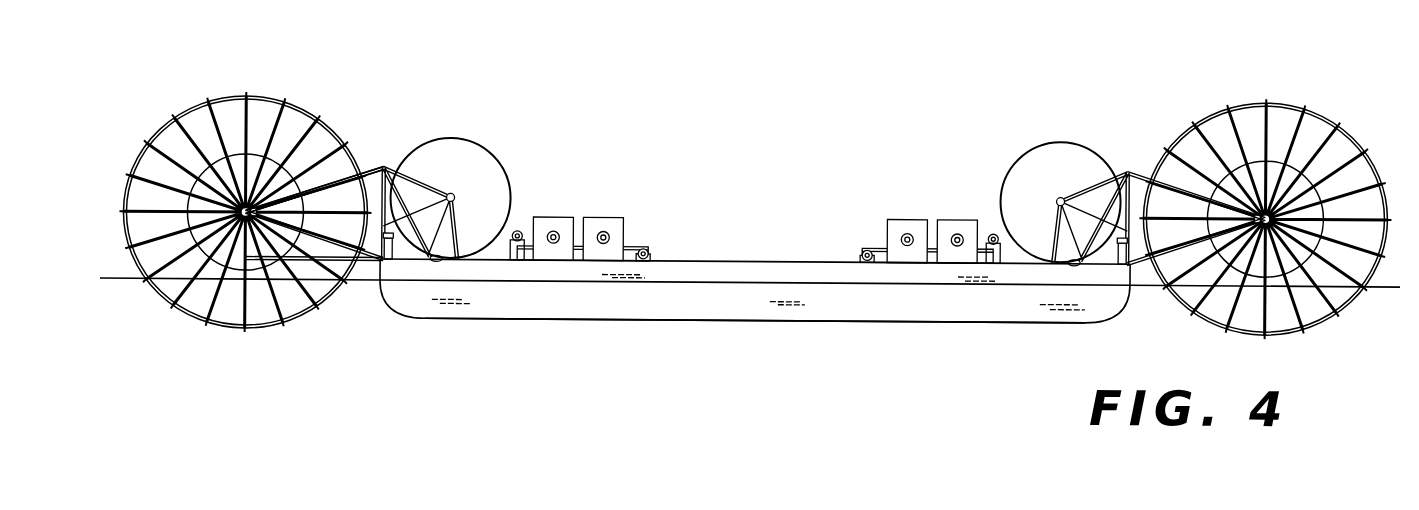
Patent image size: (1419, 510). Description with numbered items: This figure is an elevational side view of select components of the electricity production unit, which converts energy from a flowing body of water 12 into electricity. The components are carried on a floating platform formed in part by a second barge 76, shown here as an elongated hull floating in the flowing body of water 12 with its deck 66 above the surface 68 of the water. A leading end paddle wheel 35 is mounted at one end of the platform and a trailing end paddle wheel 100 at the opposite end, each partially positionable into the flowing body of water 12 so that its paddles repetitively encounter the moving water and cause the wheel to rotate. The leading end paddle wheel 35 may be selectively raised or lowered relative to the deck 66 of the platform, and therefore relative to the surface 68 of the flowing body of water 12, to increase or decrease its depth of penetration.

The trailing end paddle wheel 100 is at (229, 97).
The leading end paddle wheel 35 is at (1284, 97).
The deck 66 is at (682, 257).
The surface 68 is at (746, 278).
The flowing body of water 12 is at (778, 278).
The second barge 76 is at (537, 318).